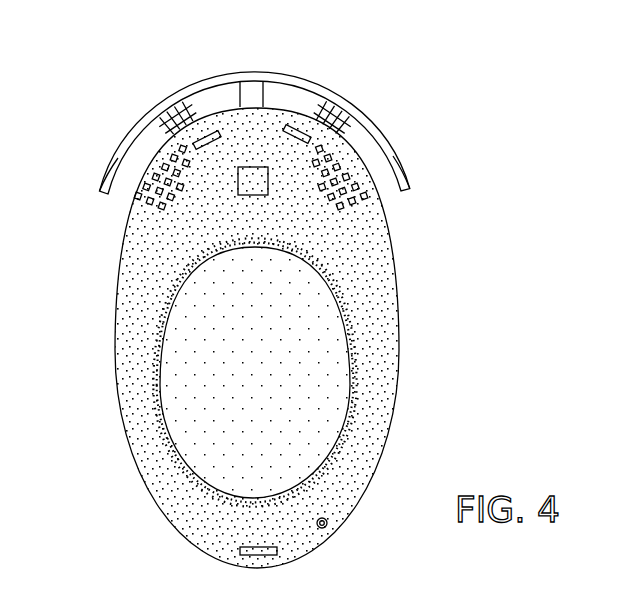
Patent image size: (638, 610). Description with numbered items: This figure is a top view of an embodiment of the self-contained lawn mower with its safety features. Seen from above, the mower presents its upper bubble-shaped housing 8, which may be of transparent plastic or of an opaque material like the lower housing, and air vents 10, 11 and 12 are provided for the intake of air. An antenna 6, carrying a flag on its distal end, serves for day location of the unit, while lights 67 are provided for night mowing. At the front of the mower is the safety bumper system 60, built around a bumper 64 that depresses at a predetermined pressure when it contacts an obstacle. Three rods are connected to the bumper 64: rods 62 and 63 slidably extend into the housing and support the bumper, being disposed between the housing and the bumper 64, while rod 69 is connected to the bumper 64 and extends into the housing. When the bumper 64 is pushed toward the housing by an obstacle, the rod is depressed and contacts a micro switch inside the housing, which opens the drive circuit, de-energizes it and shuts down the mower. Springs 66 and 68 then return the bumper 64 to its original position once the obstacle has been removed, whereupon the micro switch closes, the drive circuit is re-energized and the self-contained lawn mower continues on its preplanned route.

The antenna 6 is at (337, 492).
The upper bubble-shaped housing 8 is at (342, 410).
The air vent 10 is at (143, 210).
The air vent 11 is at (266, 178).
The air vent 12 is at (276, 546).
The safety bumper system 60 is at (255, 111).
The rod 62 is at (350, 112).
The rod 63 is at (173, 100).
The bumper 64 is at (177, 92).
The return spring 66 is at (395, 145).
The lights 67 is at (287, 129).
The return spring 68 is at (125, 133).
The rod 69 is at (274, 78).